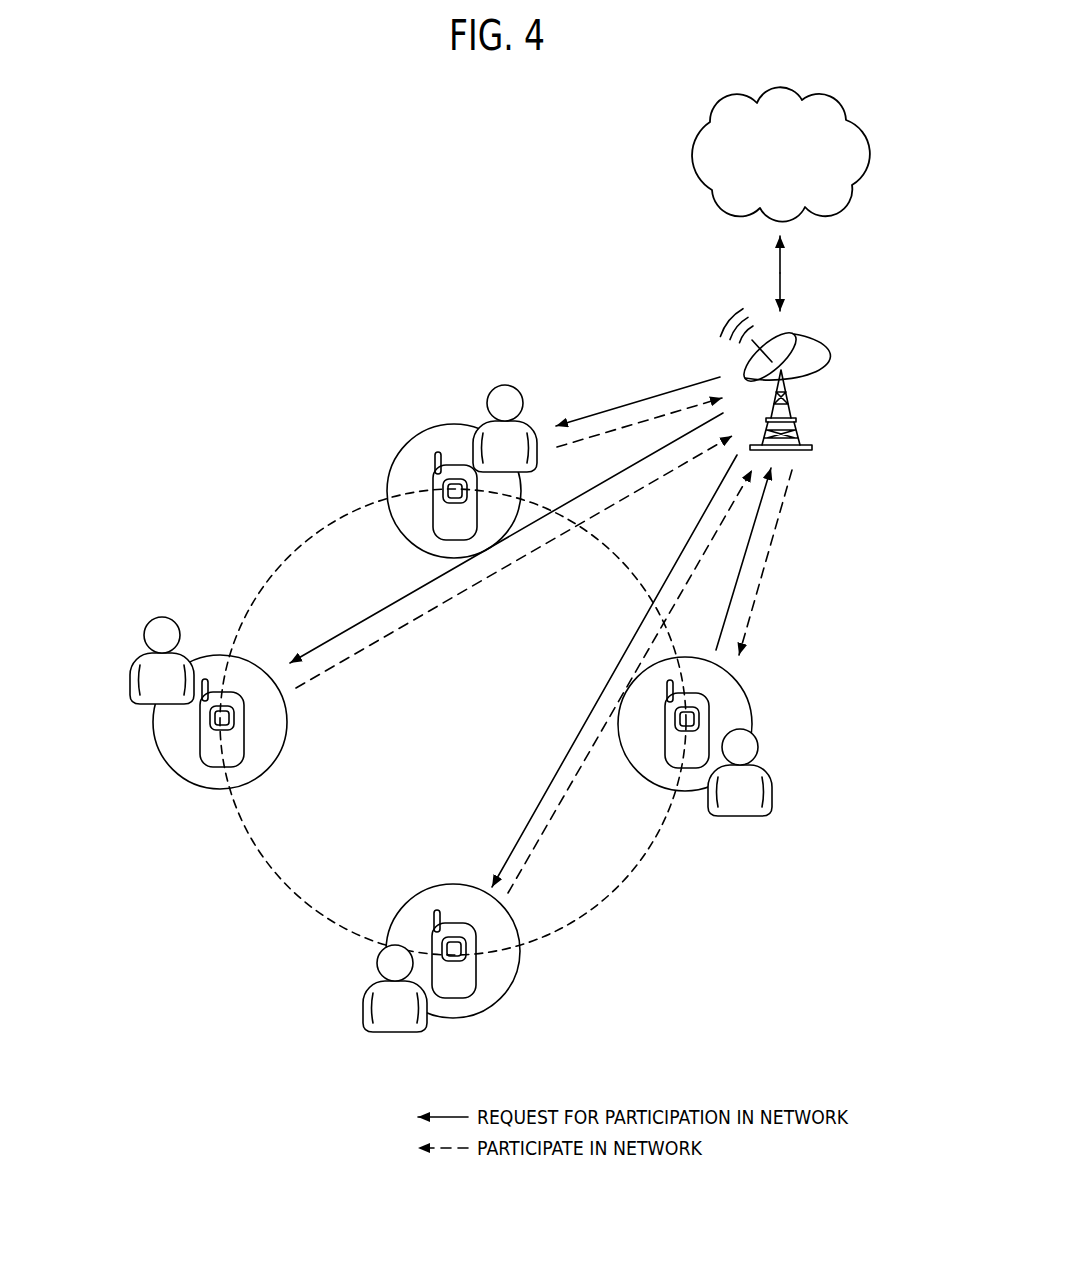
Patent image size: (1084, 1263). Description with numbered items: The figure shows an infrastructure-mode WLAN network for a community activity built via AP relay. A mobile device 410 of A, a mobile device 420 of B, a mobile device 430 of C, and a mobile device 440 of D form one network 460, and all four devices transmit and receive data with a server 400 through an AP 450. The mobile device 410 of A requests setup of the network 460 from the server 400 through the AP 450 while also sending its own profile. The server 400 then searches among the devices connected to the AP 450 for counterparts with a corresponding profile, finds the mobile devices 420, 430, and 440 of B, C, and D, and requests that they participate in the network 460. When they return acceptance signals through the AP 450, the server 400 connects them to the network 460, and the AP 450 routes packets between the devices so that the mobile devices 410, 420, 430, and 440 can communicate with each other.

The server 400 is at (697, 158).
The mobile device of A 410 is at (712, 704).
The mobile device of B 420 is at (430, 470).
The mobile device of C 430 is at (470, 1000).
The mobile device of D 440 is at (200, 760).
The AP 450 is at (800, 346).
The network 460 is at (278, 883).